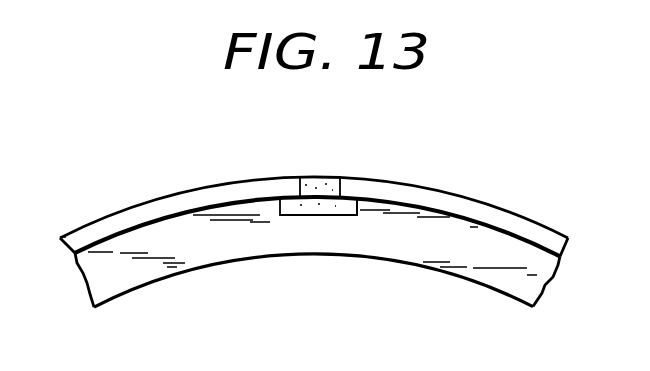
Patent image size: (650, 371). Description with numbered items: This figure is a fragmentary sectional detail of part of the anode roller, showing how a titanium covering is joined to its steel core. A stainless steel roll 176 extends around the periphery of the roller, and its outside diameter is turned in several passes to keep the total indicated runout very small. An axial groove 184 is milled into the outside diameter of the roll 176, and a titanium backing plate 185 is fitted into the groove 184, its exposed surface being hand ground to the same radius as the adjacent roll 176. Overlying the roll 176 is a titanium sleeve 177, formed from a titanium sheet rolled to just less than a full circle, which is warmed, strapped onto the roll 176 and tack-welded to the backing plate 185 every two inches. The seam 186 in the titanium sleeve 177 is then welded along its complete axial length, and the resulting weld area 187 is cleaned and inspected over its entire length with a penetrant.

The stainless steel roll 176 is at (502, 260).
The titanium sleeve 177 is at (98, 230).
The groove 184 is at (357, 214).
The titanium backing plate 185 is at (312, 215).
The seam 186 is at (350, 177).
The weld area 187 is at (311, 177).